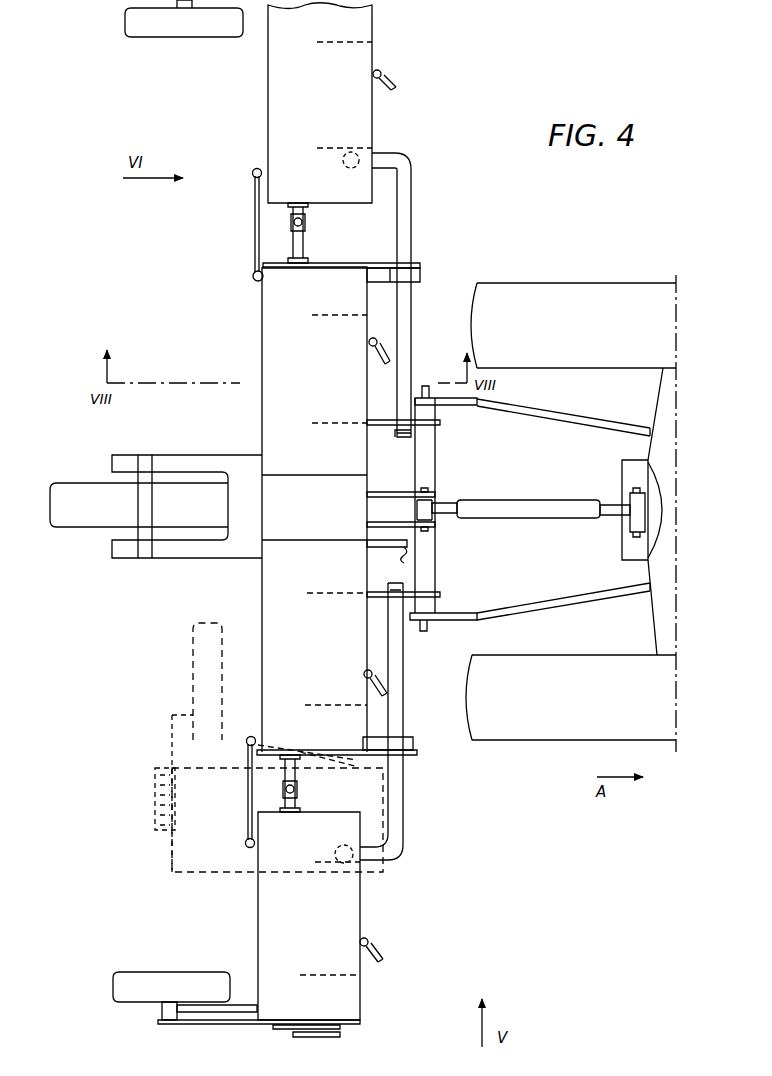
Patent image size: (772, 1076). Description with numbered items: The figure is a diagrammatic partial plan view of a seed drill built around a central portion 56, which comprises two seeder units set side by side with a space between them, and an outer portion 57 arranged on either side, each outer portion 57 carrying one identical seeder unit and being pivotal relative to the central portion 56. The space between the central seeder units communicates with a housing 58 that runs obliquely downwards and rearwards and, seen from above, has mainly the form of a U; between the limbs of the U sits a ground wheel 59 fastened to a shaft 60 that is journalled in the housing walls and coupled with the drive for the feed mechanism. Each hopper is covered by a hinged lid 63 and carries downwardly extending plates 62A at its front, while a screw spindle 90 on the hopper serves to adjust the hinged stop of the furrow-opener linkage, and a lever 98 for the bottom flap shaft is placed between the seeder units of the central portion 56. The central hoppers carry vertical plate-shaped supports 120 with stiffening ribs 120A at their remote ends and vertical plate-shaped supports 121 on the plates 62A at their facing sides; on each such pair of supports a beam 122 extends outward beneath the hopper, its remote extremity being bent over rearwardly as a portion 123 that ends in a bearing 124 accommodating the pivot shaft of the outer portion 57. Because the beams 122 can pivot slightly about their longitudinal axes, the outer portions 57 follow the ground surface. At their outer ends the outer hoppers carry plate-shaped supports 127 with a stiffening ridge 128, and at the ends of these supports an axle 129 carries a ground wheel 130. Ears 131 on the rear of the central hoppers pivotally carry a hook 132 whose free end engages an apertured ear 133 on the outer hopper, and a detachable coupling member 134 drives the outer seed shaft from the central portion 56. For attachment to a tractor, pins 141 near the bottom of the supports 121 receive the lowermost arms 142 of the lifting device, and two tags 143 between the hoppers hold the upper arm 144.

The central portion 56 is at (262, 436).
The portion 57 is at (268, 98).
The housing 58 is at (243, 460).
The ground wheel 59 is at (74, 528).
The shaft 60 is at (136, 478).
The plates 62A is at (317, 44).
The lid 63 is at (372, 36).
The screw spindle 90 is at (392, 82).
The lever 98 is at (402, 563).
The vertical plate-shaped supports 120 is at (420, 264).
The stiffening ribs 120A is at (375, 274).
The vertical plate-shaped supports 121 is at (440, 422).
The beam 122 is at (411, 216).
The bent-over portion 123 is at (393, 160).
The bearing 124 is at (349, 168).
The plate-shaped supports 127 is at (170, 718).
The stiffening ridge 128 is at (242, 1010).
The axle 129 is at (162, 1012).
The ground wheel 130 is at (152, 38).
The ears 131 is at (253, 280).
The hook 132 is at (255, 226).
The apertured ear 133 is at (256, 168).
The detachable coupling member 134 is at (304, 226).
The pins 141 is at (428, 383).
The lowermost arms 142 is at (560, 412).
The tags 143 is at (440, 508).
The upper arm 144 is at (535, 517).